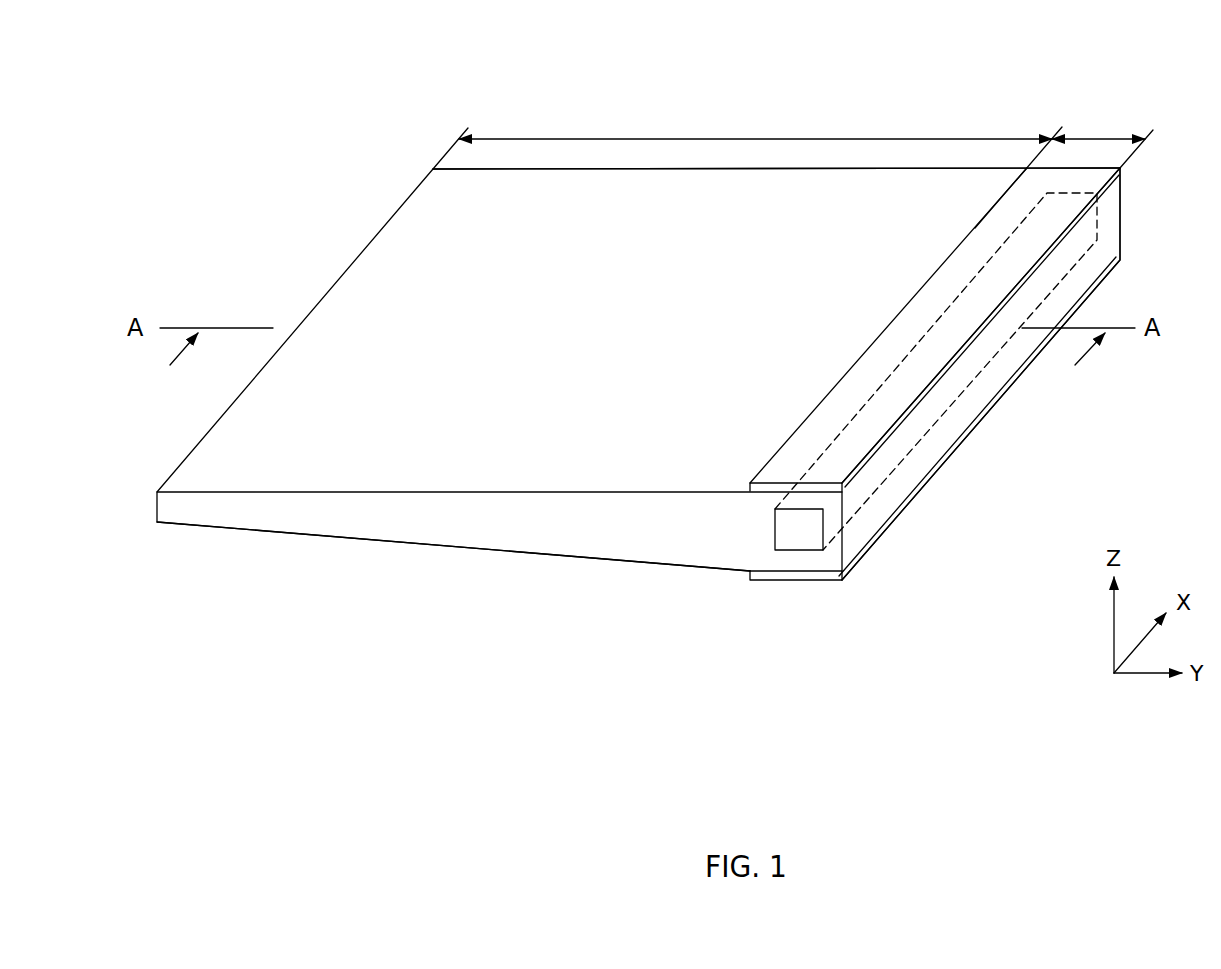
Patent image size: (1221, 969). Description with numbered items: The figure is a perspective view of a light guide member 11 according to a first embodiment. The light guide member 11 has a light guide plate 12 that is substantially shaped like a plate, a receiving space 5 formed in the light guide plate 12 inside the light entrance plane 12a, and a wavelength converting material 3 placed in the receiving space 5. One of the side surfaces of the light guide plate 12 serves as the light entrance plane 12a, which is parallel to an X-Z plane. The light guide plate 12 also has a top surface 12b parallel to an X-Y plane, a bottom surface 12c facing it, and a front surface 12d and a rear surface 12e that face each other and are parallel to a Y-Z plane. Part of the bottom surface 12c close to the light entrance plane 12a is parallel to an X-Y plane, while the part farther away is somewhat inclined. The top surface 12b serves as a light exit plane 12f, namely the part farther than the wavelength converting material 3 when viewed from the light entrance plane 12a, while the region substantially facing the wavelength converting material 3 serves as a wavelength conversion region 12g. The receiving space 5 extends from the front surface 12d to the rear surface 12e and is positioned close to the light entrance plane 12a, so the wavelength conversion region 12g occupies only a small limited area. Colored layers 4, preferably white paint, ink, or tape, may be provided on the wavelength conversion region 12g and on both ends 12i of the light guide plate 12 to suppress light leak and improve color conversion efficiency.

The light guide member 11 is at (868, 91).
The light guide plate 12 is at (604, 200).
The light entrance plane 12a is at (932, 452).
The top surface 12b is at (542, 202).
The bottom surface 12c is at (428, 545).
The front surface 12d is at (533, 527).
The rear surface 12e is at (677, 168).
The light exit plane 12f is at (760, 168).
The wavelength conversion region 12g is at (1102, 138).
The ends of the light guide plate 12i is at (790, 546).
The wavelength converting material 3 is at (805, 540).
The colored layer 4 is at (1092, 180).
The receiving space 5 is at (784, 533).